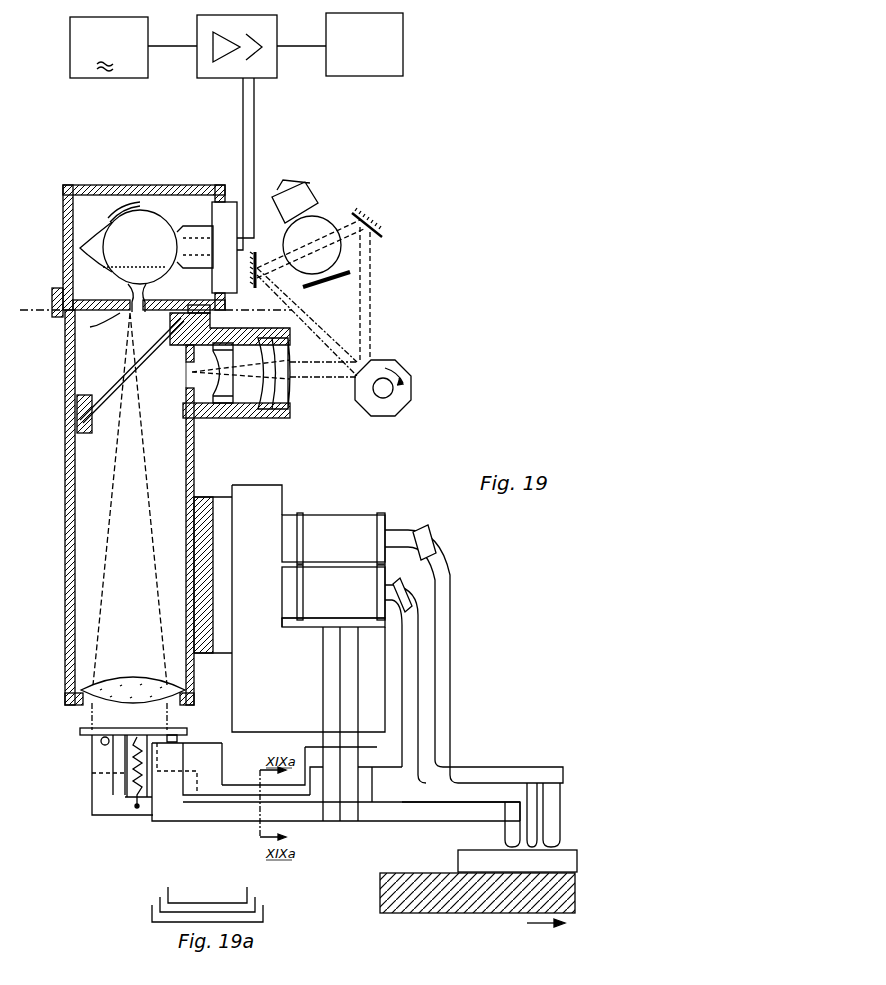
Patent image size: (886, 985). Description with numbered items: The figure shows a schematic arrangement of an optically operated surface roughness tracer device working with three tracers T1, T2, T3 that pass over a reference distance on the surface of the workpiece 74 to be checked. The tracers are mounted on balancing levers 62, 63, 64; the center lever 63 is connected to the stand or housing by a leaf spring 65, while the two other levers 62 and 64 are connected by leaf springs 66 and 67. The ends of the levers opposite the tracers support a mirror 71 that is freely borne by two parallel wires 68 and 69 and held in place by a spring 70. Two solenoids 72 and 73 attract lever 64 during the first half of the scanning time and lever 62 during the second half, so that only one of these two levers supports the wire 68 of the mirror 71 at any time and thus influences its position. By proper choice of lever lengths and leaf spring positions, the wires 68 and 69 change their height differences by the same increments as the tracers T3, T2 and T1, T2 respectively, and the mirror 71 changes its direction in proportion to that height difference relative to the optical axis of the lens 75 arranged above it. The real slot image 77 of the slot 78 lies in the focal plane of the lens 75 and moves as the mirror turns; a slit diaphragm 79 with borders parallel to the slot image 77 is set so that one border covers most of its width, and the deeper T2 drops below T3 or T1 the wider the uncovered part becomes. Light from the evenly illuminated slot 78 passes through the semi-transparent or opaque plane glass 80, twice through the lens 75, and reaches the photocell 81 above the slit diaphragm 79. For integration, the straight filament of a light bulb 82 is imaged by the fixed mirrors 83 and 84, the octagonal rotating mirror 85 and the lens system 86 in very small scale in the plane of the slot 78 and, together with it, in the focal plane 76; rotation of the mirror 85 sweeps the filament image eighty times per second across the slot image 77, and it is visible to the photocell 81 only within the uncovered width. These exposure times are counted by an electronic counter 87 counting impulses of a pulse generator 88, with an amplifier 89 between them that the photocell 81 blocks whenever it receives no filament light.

The pulse generator 88 is at (80, 75).
The amplifier 89 is at (210, 72).
The electronic counter 87 is at (355, 70).
The photocell 81 is at (115, 237).
The slit diaphragm 79 is at (130, 292).
The slot image 77 is at (130, 313).
The focal plane 76 is at (156, 301).
The plane glass 80 is at (107, 385).
The slot 78 is at (187, 370).
The lens system 86 is at (288, 350).
The light bulb 82 is at (330, 257).
The fixed mirror 83 is at (363, 213).
The fixed mirror 84 is at (304, 289).
The octagonal rotating mirror 85 is at (405, 392).
The solenoid 72 is at (345, 520).
The solenoid 73 is at (350, 582).
The leaf spring 65 is at (317, 640).
The leaf spring 66 is at (337, 670).
The leaf spring 67 is at (360, 695).
The lens 75 is at (80, 687).
The mirror 71 is at (135, 732).
The wire 68 is at (177, 741).
The wire 69 is at (107, 743).
The spring 70 is at (133, 762).
The balancing lever 64 is at (170, 810).
The center balancing lever 63 is at (213, 798).
The balancing lever 62 is at (258, 788).
The workpiece 74 is at (467, 863).
The tracer T1 is at (552, 783).
The tracer T2 is at (532, 783).
The tracer T3 is at (512, 802).